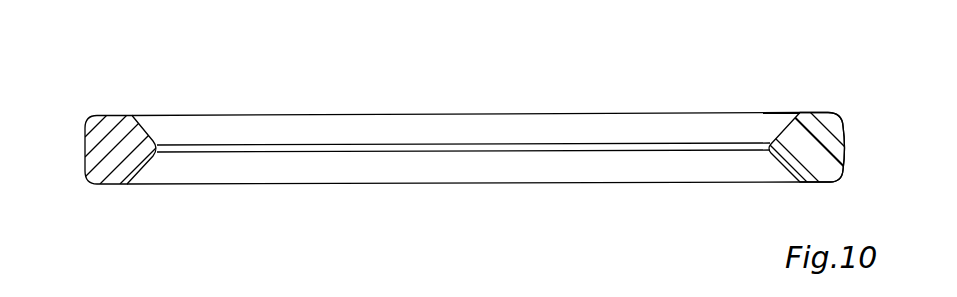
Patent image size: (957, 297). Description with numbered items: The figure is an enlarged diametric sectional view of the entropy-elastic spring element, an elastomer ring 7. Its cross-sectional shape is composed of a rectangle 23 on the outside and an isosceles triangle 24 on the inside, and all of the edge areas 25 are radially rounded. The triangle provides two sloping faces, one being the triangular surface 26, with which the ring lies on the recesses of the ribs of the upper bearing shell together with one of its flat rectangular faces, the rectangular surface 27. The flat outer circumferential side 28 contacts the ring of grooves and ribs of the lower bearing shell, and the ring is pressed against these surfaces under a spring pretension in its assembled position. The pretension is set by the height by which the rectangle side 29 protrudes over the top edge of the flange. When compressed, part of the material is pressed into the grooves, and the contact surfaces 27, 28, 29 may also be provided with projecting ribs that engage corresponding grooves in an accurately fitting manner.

The elastomer ring 7 is at (80, 155).
The rectangle 23 is at (113, 174).
The isosceles triangle 24 is at (156, 151).
The edge areas 25 is at (158, 141).
The triangular surface 26 is at (779, 162).
The rectangular surface 27 is at (818, 184).
The flat outer circumferential side 28 is at (843, 140).
The rectangle side 29 is at (817, 113).